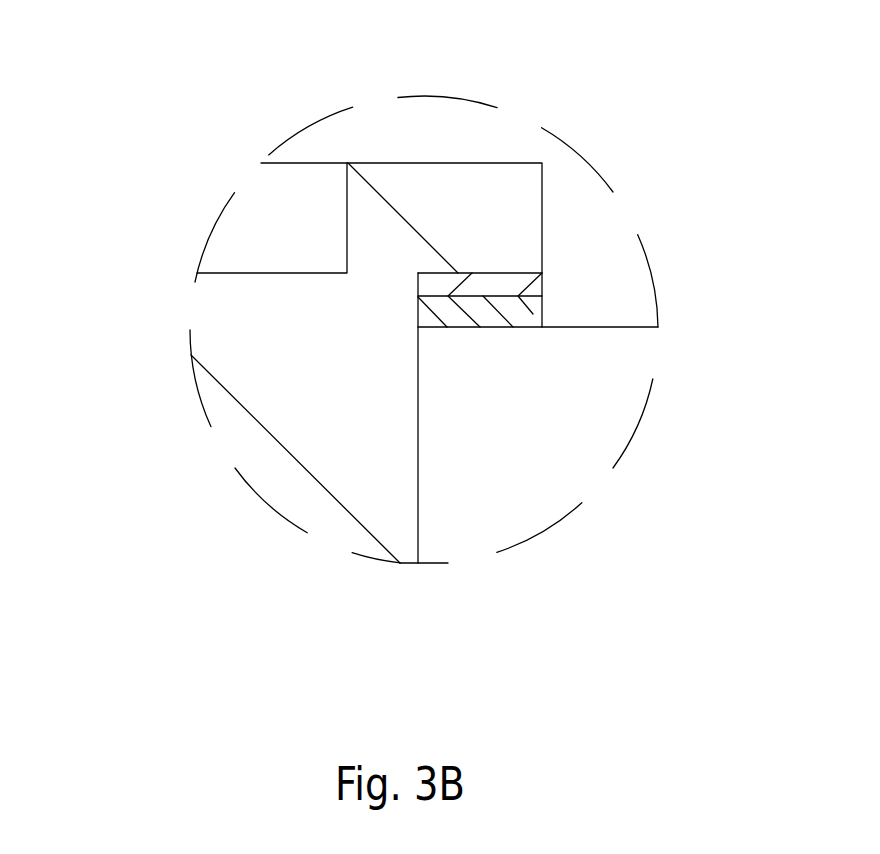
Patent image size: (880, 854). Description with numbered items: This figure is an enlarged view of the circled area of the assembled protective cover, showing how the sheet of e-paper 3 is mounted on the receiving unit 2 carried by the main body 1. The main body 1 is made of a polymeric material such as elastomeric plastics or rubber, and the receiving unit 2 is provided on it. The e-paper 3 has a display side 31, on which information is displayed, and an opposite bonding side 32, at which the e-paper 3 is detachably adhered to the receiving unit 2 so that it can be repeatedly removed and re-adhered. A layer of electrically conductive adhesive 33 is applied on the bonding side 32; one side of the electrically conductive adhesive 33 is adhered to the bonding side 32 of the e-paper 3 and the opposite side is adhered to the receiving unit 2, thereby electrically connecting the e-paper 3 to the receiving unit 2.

The main body 1 is at (537, 395).
The receiving unit 2 is at (542, 316).
The e-paper 3 is at (493, 195).
The display side 31 is at (262, 270).
The bonding side 32 is at (515, 272).
The electrically conductive adhesive 33 is at (541, 290).